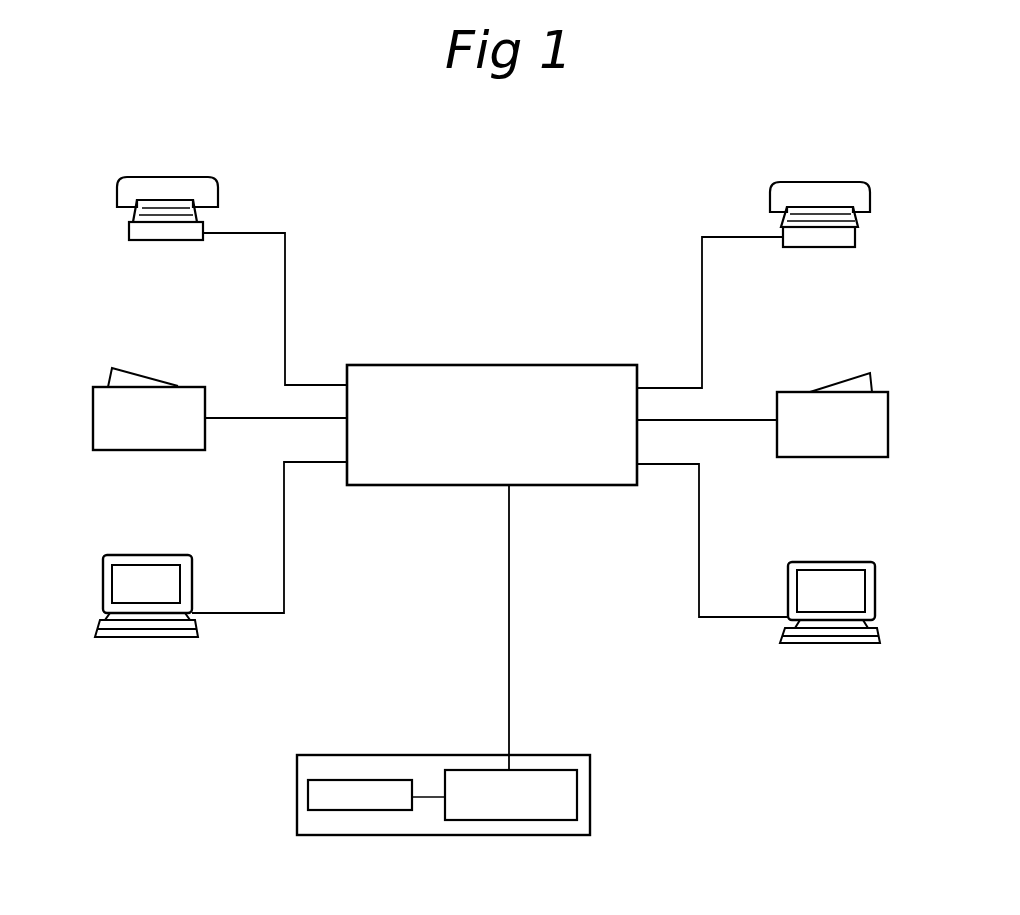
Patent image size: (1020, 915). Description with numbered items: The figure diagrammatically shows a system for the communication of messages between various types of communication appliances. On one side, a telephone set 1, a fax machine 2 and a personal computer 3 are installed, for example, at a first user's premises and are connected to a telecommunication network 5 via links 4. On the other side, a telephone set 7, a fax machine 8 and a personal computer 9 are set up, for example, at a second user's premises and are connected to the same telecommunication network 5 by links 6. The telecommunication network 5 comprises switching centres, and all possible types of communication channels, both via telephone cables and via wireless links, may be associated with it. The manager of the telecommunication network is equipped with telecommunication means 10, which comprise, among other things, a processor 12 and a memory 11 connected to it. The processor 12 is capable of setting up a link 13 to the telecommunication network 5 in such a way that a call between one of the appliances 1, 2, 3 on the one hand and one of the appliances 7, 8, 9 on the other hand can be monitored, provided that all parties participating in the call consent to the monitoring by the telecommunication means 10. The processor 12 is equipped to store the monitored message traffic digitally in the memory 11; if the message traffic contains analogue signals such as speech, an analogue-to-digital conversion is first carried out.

The telephone set 1 is at (203, 192).
The fax machine 2 is at (100, 402).
The personal computer 3 is at (133, 577).
The links 4 is at (327, 297).
The telecommunication network 5 is at (486, 336).
The links 6 is at (674, 279).
The telephone set 7 is at (850, 193).
The fax machine 8 is at (875, 400).
The personal computer 9 is at (858, 572).
The telecommunication means 10 is at (454, 800).
The memory 11 is at (373, 781).
The processor 12 is at (553, 772).
The link 13 is at (509, 580).